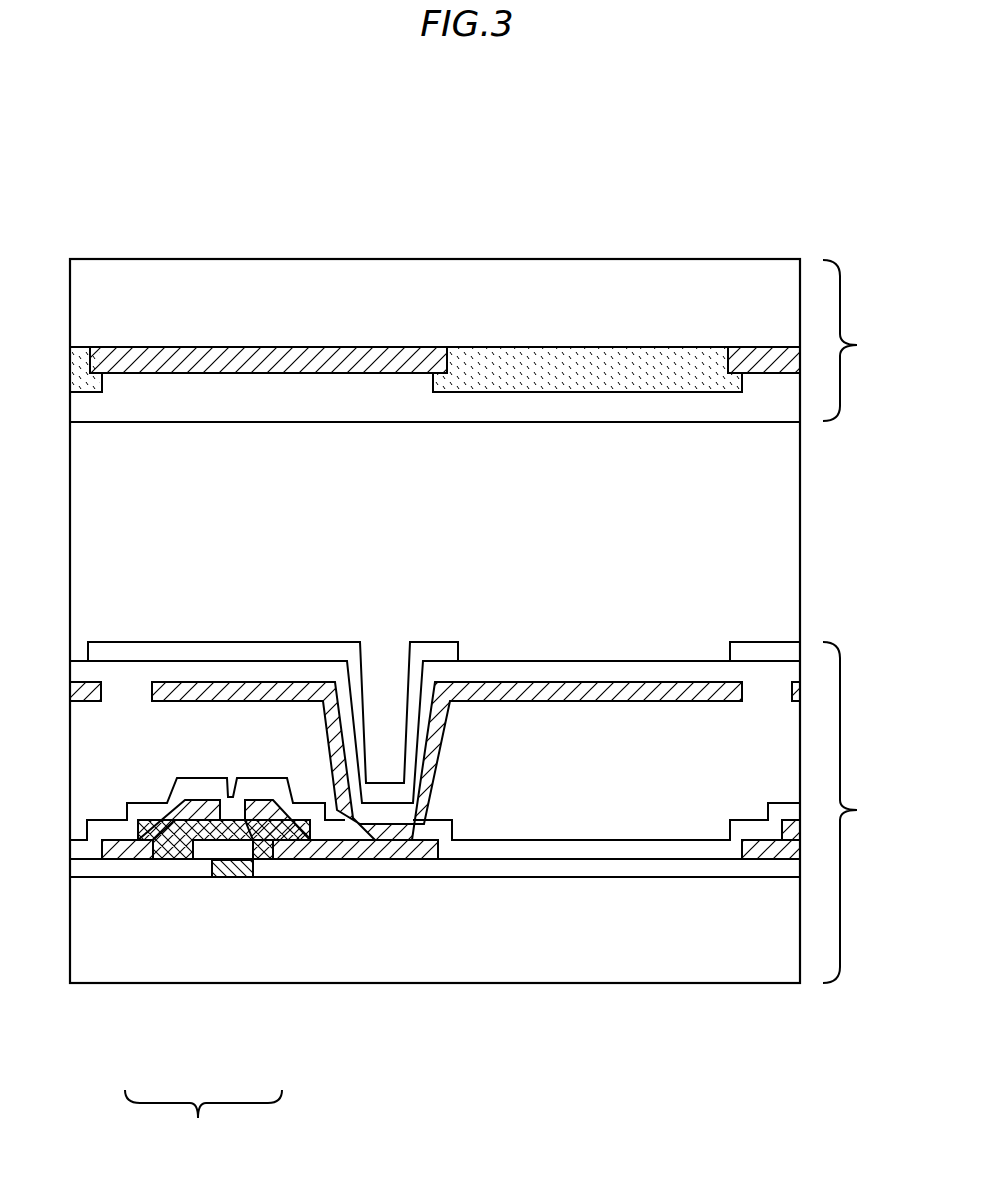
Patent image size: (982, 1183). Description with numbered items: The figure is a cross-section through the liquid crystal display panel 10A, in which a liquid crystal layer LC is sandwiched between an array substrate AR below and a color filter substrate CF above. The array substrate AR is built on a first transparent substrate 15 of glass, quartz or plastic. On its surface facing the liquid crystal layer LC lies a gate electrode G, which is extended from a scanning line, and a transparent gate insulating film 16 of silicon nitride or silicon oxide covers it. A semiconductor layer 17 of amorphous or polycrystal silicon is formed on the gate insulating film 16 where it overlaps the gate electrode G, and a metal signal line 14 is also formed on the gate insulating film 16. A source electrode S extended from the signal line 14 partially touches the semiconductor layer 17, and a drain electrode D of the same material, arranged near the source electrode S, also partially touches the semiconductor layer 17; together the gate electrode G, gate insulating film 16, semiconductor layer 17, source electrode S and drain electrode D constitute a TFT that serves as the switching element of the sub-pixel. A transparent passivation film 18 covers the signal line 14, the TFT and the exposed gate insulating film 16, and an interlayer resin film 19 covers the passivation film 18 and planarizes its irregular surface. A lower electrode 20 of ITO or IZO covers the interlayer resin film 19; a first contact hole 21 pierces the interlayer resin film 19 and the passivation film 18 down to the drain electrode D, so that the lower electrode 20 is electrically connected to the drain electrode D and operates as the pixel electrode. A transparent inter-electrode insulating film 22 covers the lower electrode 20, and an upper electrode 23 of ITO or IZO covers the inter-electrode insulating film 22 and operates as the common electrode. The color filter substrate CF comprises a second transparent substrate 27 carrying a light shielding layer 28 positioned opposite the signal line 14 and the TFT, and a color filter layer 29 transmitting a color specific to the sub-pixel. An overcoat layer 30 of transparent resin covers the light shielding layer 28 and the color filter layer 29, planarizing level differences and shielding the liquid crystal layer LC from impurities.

The liquid crystal display panel 10A is at (90, 110).
The second transparent substrate 27 is at (155, 315).
The light shielding layer 28 is at (215, 360).
The color filter layer 29 is at (612, 372).
The overcoat layer 30 is at (302, 407).
The color filter substrate CF is at (858, 340).
The liquid crystal layer LC is at (457, 515).
The array substrate AR is at (857, 812).
The upper electrode 23 is at (158, 655).
The inter-electrode insulating film 22 is at (292, 672).
The first contact hole 21 is at (381, 803).
The lower electrode 20 is at (660, 692).
The interlayer resin film 19 is at (531, 754).
The passivation film 18 is at (280, 790).
The semiconductor layer 17 is at (217, 838).
The gate insulating film 16 is at (495, 868).
The first transparent substrate 15 is at (403, 930).
The signal line 14 is at (122, 850).
The source electrode S is at (165, 832).
The drain electrode D is at (257, 807).
The gate electrode G is at (240, 870).
The element TFT is at (203, 1120).